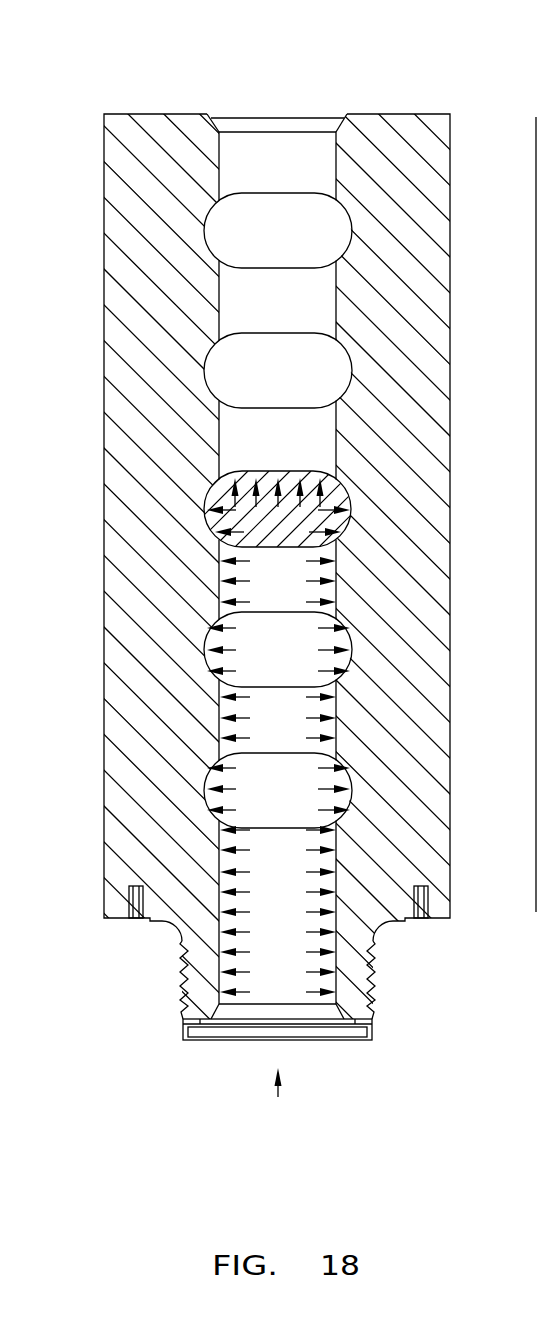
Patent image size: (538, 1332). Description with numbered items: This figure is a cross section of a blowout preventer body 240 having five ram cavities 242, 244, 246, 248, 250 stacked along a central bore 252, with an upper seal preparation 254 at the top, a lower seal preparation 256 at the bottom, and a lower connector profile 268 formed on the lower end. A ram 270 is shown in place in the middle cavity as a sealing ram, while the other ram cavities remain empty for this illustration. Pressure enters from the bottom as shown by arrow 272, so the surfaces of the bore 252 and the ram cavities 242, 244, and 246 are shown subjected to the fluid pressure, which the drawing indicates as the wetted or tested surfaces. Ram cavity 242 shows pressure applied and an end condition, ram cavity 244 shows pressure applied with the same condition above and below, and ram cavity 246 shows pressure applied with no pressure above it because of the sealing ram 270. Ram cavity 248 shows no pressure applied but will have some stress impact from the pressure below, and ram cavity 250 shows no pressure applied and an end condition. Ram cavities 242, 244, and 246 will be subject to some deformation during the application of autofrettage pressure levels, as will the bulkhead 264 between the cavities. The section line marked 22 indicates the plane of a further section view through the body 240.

The section line indicator for FIG. 22 is at (277, 52).
The blowout preventer body 240 is at (382, 143).
The ram cavity 242 is at (217, 780).
The ram cavity 244 is at (217, 640).
The ram cavity 246 is at (218, 500).
The ram cavity 248 is at (217, 373).
The ram cavity 250 is at (217, 230).
The bore 252 is at (220, 165).
The upper seal preparation 254 is at (216, 119).
The lower seal preparation 256 is at (220, 1010).
The bulkhead 264 is at (337, 446).
The lower connector profile 268 is at (373, 977).
The ram 270 is at (335, 498).
The arrow 272 is at (282, 1078).